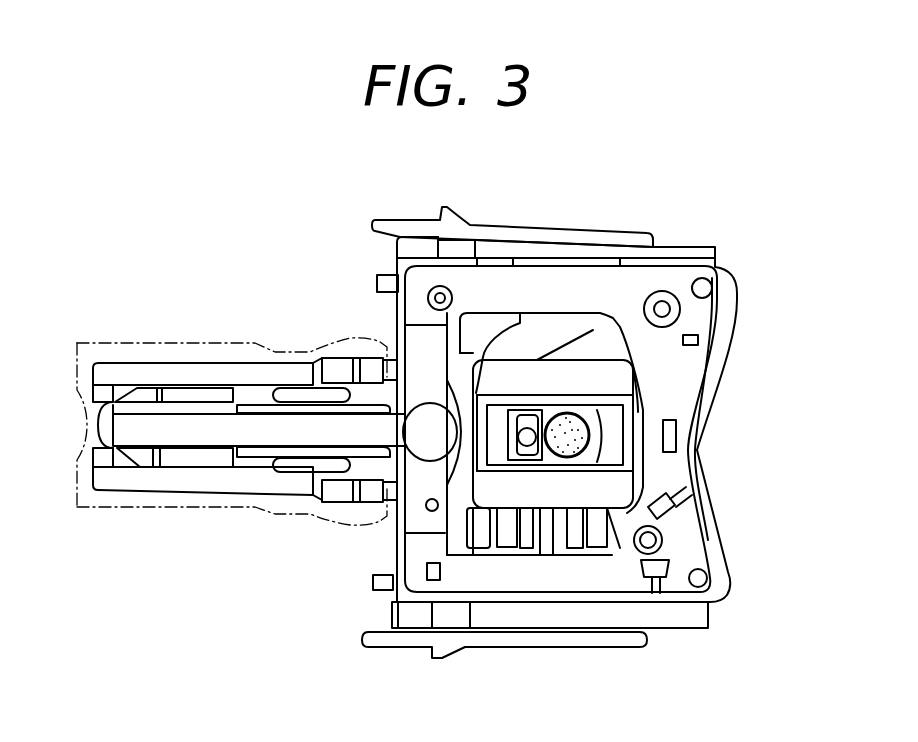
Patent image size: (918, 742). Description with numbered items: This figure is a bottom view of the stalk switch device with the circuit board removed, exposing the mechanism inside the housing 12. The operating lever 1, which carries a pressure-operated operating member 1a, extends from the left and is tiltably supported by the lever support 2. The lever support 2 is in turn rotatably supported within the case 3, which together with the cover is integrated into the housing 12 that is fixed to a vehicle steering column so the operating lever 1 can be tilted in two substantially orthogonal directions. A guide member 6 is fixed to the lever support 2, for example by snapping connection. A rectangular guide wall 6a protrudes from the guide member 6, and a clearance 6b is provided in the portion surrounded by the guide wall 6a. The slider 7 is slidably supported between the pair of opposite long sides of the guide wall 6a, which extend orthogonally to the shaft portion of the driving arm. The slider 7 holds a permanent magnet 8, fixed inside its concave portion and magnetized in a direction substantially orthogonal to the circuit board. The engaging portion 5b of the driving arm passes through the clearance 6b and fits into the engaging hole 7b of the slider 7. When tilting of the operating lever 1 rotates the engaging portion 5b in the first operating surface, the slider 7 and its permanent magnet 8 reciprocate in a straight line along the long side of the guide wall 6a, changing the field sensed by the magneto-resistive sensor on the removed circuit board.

The operating lever 1 is at (206, 343).
The operating member 1a is at (194, 492).
The lever support 2 is at (582, 343).
The case 3 is at (549, 432).
The housing 12 is at (721, 251).
The engaging portion 5b is at (525, 437).
The guide member 6 is at (623, 378).
The guide wall 6a is at (601, 470).
The clearance 6b is at (480, 413).
The slider 7 is at (597, 422).
The engaging hole 7b is at (535, 452).
The permanent magnet 8 is at (568, 445).